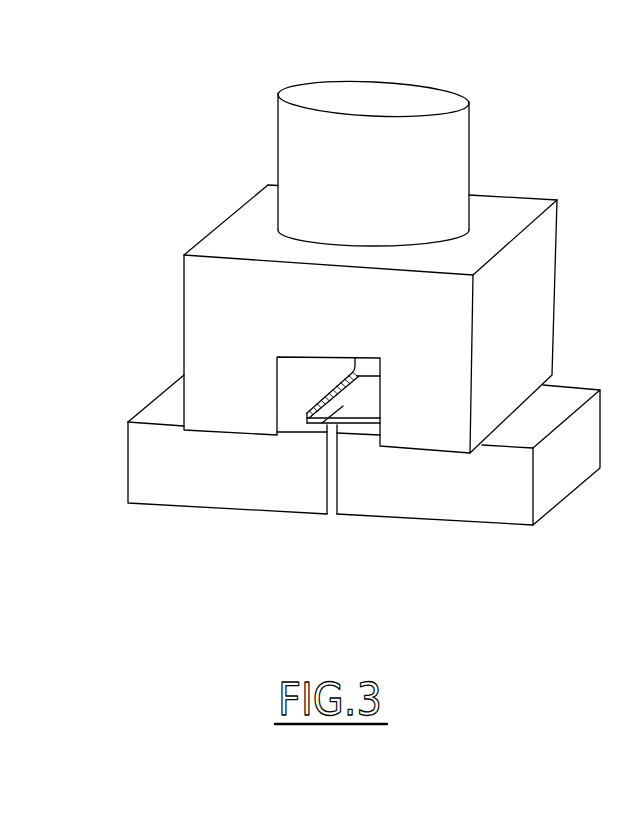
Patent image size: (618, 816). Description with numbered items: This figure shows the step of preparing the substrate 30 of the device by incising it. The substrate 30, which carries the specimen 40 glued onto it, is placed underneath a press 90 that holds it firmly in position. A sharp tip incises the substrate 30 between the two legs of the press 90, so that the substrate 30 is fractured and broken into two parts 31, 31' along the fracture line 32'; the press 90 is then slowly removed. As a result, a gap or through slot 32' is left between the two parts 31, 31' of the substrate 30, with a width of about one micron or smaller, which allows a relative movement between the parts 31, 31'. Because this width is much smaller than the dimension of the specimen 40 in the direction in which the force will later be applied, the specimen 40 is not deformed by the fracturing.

The press 90 is at (298, 178).
The substrate 30 is at (324, 490).
The first part of the substrate 31 is at (188, 444).
The second part of the substrate 31' is at (468, 493).
The fracture line / through slot 32' is at (295, 508).
The specimen 40 is at (307, 419).